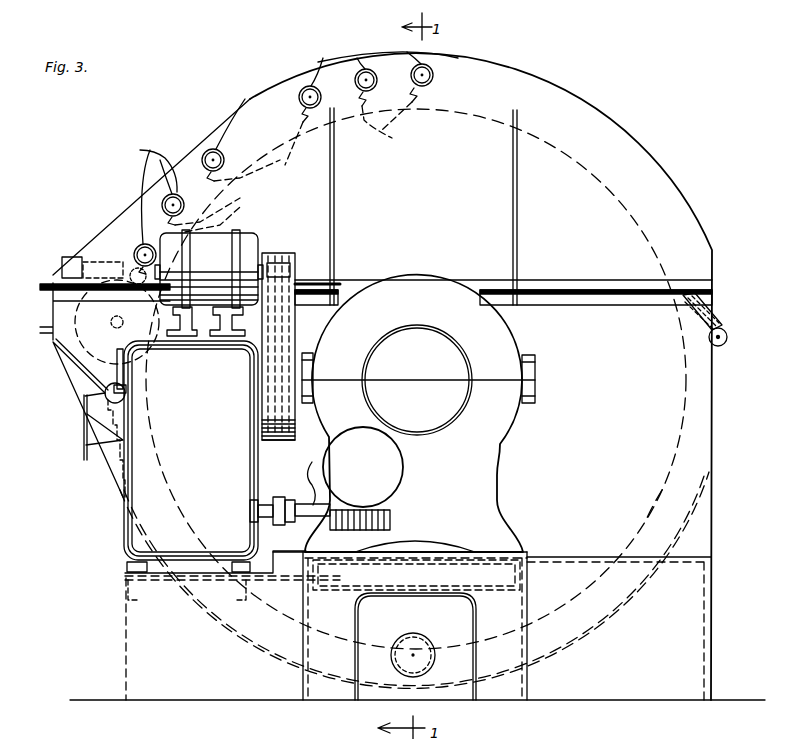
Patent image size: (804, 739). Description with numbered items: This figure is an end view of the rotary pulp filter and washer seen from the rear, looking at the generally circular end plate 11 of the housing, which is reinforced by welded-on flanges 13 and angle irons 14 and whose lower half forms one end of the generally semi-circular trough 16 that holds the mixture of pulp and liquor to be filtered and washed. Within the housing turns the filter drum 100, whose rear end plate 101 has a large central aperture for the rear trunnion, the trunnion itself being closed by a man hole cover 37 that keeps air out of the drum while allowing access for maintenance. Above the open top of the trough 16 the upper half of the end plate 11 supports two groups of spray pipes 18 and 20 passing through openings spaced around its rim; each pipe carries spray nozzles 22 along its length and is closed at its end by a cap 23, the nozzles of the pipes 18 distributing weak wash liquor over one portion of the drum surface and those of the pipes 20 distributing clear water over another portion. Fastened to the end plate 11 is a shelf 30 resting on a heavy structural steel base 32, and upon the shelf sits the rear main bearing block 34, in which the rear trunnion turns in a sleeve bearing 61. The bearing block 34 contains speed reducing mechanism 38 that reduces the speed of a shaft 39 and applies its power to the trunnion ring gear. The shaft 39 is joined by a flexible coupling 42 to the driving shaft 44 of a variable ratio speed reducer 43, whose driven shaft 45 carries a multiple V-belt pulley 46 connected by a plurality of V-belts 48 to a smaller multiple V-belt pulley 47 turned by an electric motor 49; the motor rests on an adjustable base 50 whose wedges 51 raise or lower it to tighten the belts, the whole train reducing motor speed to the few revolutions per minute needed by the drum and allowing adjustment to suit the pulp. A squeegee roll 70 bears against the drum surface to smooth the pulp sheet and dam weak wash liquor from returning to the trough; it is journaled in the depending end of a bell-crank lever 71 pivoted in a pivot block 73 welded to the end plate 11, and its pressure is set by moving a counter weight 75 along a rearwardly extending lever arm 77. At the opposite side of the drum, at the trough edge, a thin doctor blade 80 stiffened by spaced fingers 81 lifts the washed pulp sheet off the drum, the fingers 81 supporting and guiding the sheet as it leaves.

The end plate 11 is at (648, 154).
The flanges 13 is at (335, 200).
The angle irons 14 is at (75, 300).
The trough 16 is at (588, 646).
The spray pipes 18 is at (158, 162).
The spray pipes 20 is at (324, 57).
The spray nozzles 22 is at (278, 181).
The caps 23 is at (218, 148).
The shelf 30 is at (430, 553).
The structural steel base 32 is at (316, 576).
The rear main bearing block 34 is at (468, 476).
The man hole cover 37 is at (444, 388).
The speed reducing mechanism 38 is at (370, 471).
The shaft 39 is at (308, 475).
The flexible coupling 42 is at (284, 495).
The variable ratio speed reducer 43 is at (190, 426).
The driving shaft 44 is at (257, 503).
The driven shaft 45 is at (262, 430).
The multiple V-belt pulley 46 is at (300, 428).
The multiple V-belt pulley 47 is at (292, 258).
The V-belts 48 is at (292, 338).
The electric motor 49 is at (248, 238).
The adjustable base 50 is at (186, 338).
The wedges 51 is at (220, 320).
The sleeve bearing 61 is at (461, 343).
The squeegee roll 70 is at (60, 372).
The bell-crank lever 71 is at (52, 342).
The pivot block 73 is at (150, 246).
The counter weight 75 is at (66, 255).
The lever arm 77 is at (98, 250).
The doctor blade 80 is at (705, 301).
The fingers 81 is at (728, 334).
The filter drum 100 is at (642, 227).
The end plate 101 is at (668, 491).